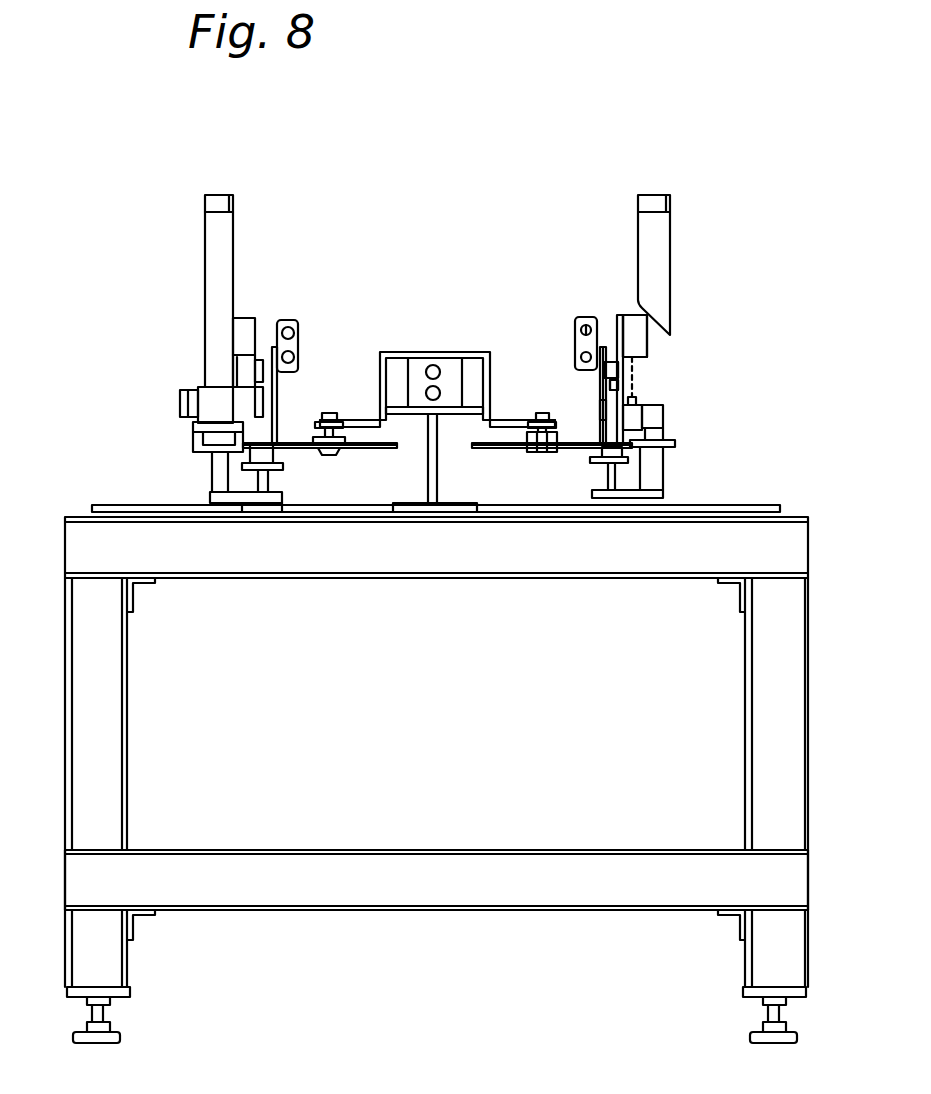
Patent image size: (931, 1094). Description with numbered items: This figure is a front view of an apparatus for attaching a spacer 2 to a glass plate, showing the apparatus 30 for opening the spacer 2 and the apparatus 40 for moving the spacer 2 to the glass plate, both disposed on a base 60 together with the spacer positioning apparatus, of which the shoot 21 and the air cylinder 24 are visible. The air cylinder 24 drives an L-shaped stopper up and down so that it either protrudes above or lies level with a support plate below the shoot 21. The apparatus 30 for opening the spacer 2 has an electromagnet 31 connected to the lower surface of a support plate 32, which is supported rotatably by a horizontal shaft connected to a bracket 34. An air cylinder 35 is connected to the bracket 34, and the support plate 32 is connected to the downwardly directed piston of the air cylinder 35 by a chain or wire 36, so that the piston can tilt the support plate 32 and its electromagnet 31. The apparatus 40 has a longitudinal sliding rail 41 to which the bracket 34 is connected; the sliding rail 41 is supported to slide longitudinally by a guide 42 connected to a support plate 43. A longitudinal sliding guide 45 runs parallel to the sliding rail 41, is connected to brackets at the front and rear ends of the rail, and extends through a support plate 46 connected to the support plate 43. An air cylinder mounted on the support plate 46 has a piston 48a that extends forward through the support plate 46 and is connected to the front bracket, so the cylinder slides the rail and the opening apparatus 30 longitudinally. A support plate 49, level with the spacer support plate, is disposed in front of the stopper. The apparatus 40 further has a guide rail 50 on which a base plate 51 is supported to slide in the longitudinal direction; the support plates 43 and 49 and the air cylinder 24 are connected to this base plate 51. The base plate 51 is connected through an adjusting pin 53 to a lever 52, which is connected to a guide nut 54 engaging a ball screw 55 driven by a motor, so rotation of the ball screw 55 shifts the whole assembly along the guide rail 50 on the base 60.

The spacer 2 is at (662, 437).
The shoot 21 is at (215, 270).
The air cylinder 24 is at (655, 473).
The apparatus for opening the spacer 30 is at (170, 436).
The electromagnet 31 is at (662, 420).
The support plate 32 is at (650, 407).
The bracket 34 is at (572, 345).
The air cylinder 35 is at (633, 333).
The chain or wire 36 is at (633, 375).
The apparatus for moving the spacer to the glass plate 40 is at (627, 290).
The sliding rail 41 is at (578, 348).
The guide 42 is at (608, 330).
The support plate 43 is at (273, 392).
The sliding guide 45 is at (592, 325).
The support plate 46 is at (580, 318).
The piston 48a is at (580, 345).
The support plate 49 is at (675, 446).
The guide rail 50 is at (290, 460).
The base plate 51 is at (370, 450).
The lever 52 is at (380, 420).
The adjusting pin 53 is at (328, 455).
The guide nut 54 is at (417, 385).
The ball screw 55 is at (432, 365).
The base 60 is at (775, 792).